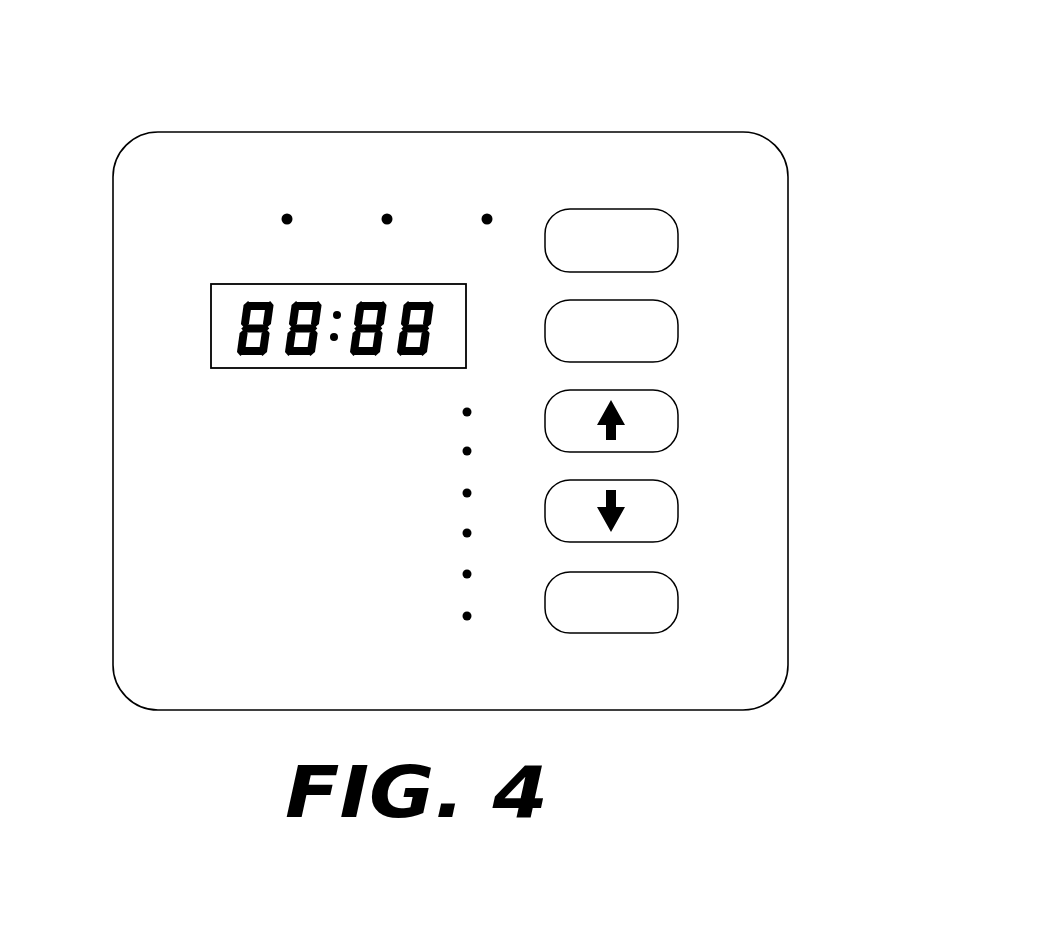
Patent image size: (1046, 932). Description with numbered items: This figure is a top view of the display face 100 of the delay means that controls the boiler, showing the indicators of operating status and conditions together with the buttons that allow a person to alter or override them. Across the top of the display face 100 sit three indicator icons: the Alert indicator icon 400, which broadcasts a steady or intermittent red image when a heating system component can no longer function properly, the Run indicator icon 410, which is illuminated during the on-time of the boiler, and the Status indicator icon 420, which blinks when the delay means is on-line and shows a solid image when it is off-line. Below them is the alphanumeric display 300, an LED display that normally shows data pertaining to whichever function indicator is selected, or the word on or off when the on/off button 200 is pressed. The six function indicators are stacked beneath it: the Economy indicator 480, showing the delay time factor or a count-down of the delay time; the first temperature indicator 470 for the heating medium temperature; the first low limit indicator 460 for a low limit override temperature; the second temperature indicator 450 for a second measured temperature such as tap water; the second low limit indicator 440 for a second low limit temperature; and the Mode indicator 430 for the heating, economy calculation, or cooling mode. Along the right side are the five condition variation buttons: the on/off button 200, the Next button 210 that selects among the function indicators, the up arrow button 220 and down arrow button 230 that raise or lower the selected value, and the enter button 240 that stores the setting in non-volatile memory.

The display face 100 is at (716, 100).
The on/off button 200 is at (680, 237).
The Next button 210 is at (679, 328).
The up arrow button 220 is at (678, 420).
The down arrow button 230 is at (678, 505).
The enter button 240 is at (678, 602).
The alphanumeric display 300 is at (211, 328).
The Alert indicator icon 400 is at (287, 219).
The Run indicator icon 410 is at (387, 219).
The Status indicator icon 420 is at (487, 219).
The Mode indicator 430 is at (467, 616).
The Low Limit 2 indicator 440 is at (467, 574).
The Temperature 2 indicator 450 is at (467, 533).
The Low Limit 1 indicator 460 is at (467, 493).
The Temperature 1 indicator 470 is at (467, 451).
The Economy indicator 480 is at (467, 412).